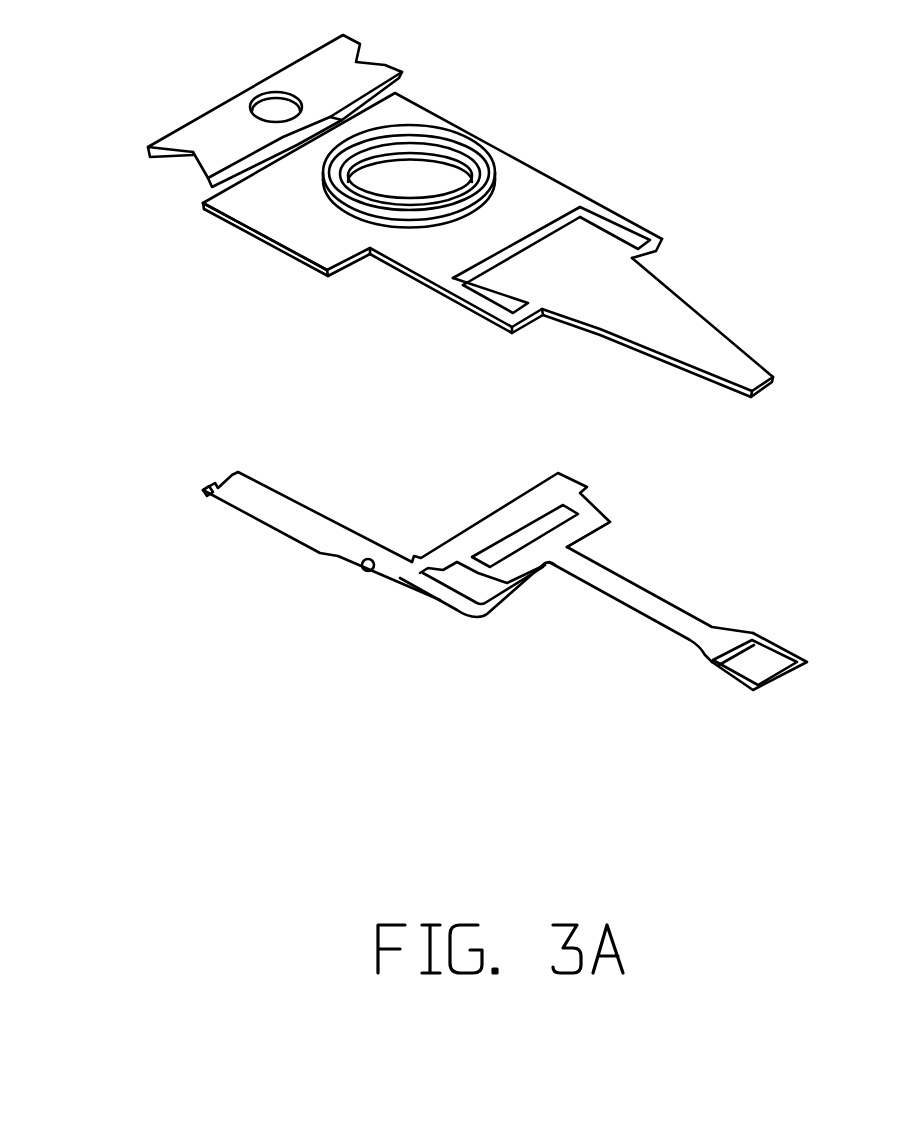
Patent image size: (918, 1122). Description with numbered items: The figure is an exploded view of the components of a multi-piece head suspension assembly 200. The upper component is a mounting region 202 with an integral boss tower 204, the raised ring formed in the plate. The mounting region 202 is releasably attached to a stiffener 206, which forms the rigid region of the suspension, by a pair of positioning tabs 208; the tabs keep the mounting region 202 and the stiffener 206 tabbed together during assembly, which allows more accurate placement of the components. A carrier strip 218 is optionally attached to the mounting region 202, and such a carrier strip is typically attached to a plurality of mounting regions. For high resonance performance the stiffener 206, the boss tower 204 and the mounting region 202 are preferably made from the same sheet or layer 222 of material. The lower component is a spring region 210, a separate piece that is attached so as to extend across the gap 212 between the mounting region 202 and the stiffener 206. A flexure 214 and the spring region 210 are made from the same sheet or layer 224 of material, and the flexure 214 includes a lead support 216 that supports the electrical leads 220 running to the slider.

The head suspension assembly 200 is at (187, 390).
The mounting region 202 is at (262, 228).
The boss tower 204 is at (440, 135).
The stiffener 206 is at (683, 324).
The positioning tabs 208 is at (632, 228).
The spring region 210 is at (594, 509).
The gap 212 is at (542, 235).
The flexure 214 is at (722, 673).
The lead support 216 is at (283, 524).
The carrier strip 218 is at (222, 125).
The electrical leads 220 is at (450, 600).
The sheet or layer of material 222 is at (208, 202).
The sheet or layer of material 224 is at (597, 532).